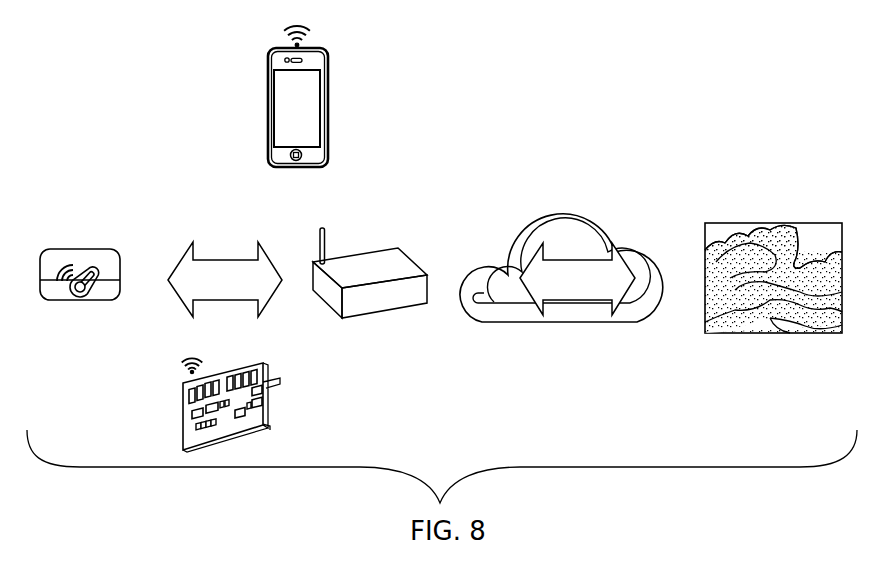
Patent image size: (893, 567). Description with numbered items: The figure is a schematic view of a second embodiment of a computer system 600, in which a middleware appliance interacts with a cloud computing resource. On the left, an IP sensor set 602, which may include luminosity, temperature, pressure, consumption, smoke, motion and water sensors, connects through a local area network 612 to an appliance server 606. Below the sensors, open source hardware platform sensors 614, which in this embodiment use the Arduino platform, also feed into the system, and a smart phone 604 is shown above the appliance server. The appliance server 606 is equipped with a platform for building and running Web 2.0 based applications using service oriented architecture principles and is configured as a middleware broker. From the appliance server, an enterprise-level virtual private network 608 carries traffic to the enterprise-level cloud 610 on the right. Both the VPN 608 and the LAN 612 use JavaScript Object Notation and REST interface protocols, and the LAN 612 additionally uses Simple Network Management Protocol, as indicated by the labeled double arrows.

The system 600 is at (628, 94).
The IP sensor set 602 is at (80, 249).
The smart phone 604 is at (328, 105).
The appliance server 606 is at (373, 248).
The enterprise-level virtual private network 608 is at (567, 208).
The enterprise-level cloud 610 is at (790, 223).
The local area network 612 is at (225, 260).
The open source hardware platform sensors 614 is at (183, 408).